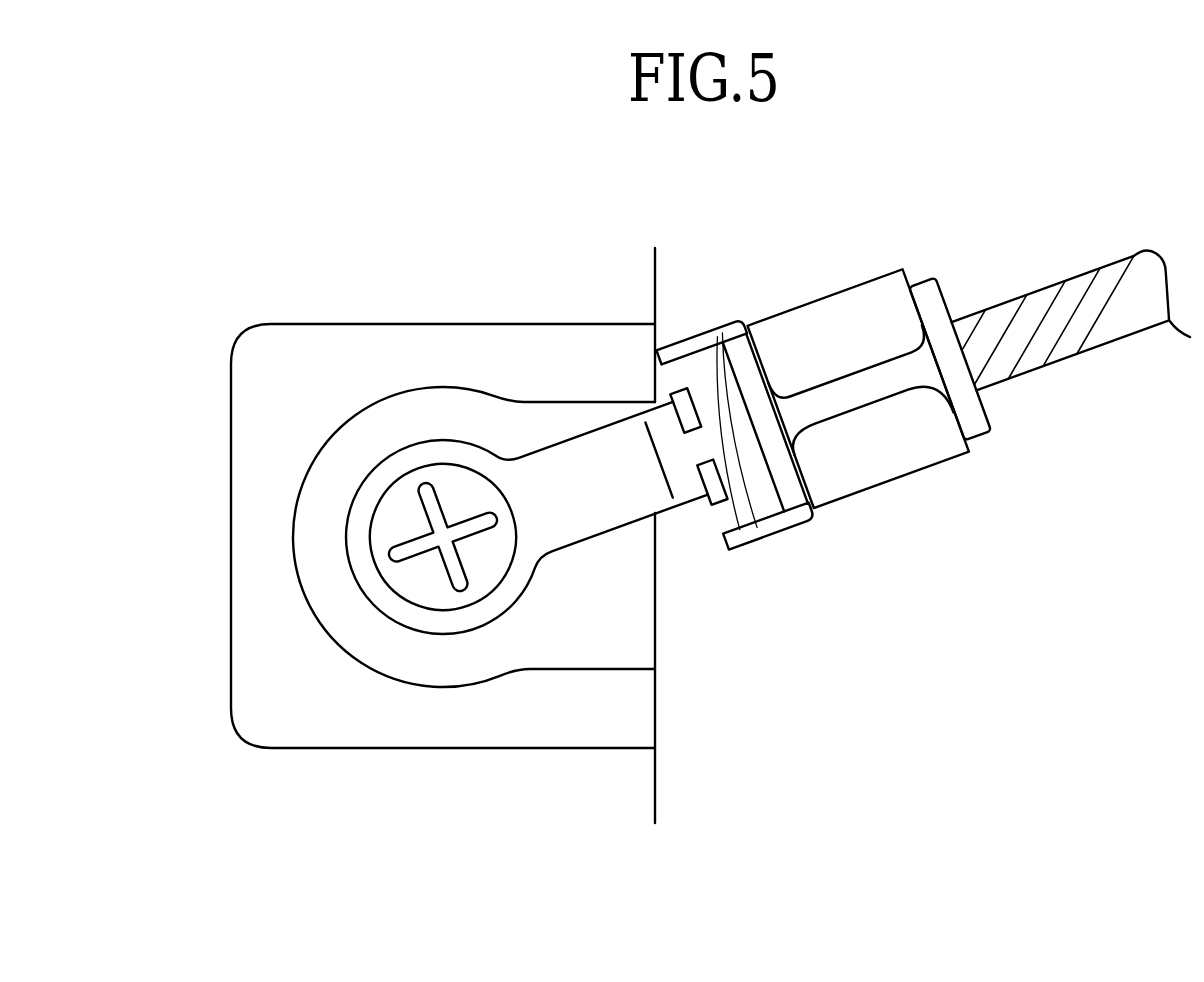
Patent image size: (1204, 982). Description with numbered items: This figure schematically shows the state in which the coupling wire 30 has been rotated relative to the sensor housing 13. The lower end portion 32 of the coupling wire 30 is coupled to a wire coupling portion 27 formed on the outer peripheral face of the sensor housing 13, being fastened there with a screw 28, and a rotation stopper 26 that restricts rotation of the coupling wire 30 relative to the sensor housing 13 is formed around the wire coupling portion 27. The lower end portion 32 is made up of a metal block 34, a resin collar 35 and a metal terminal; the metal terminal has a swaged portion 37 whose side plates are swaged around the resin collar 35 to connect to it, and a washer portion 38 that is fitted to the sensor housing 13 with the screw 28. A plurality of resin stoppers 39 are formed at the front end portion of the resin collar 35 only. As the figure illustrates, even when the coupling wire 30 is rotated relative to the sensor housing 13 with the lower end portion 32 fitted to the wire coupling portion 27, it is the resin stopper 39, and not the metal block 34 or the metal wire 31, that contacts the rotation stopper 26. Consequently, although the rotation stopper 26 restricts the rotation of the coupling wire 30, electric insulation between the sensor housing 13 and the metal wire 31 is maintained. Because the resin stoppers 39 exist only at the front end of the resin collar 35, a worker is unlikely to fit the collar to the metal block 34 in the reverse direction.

The sensor housing 13 is at (534, 204).
The rotation stopper 26 is at (400, 322).
The wire coupling portion 27 is at (583, 645).
The screw 28 is at (423, 607).
The coupling wire 30 is at (1023, 513).
The metal wire 31 is at (1050, 286).
The lower end portion 32 is at (824, 205).
The metal block 34 is at (767, 537).
The resin collar 35 is at (906, 357).
The swaged portion 37 is at (903, 487).
The washer portion 38 is at (604, 538).
The resin stoppers 39 is at (724, 332).